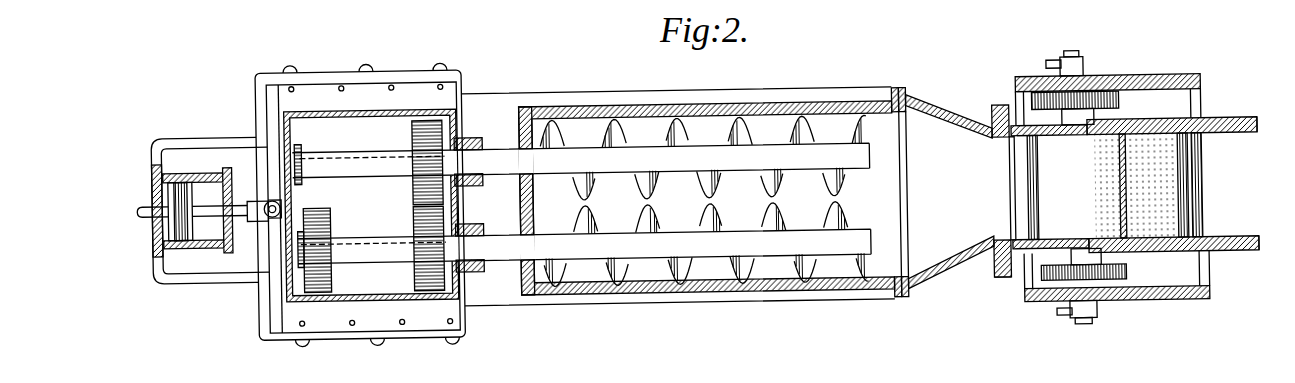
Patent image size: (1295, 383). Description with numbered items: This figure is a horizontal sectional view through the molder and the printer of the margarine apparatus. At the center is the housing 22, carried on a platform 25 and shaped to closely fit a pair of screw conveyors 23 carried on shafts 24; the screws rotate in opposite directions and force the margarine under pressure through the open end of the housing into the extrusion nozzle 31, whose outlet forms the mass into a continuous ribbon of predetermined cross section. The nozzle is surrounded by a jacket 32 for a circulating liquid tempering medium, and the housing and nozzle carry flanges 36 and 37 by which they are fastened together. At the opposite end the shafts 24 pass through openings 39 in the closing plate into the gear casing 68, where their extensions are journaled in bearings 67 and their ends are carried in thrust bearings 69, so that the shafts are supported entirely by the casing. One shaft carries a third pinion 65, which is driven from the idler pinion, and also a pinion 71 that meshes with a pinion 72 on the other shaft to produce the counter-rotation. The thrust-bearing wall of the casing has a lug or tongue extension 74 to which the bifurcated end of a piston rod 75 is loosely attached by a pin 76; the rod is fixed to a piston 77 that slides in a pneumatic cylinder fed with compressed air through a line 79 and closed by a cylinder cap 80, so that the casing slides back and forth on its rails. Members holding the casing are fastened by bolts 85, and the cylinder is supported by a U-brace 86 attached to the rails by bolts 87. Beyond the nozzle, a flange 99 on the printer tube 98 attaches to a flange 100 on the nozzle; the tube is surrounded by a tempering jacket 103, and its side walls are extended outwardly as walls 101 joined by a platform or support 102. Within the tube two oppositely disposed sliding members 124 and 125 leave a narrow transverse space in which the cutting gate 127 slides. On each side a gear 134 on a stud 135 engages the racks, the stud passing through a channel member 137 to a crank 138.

The housing 22 is at (750, 104).
The screw conveyors 23 is at (653, 210).
The shafts 24 is at (383, 237).
The platform 25 is at (616, 90).
The extrusion nozzle 31 is at (952, 113).
The jacket 32 is at (953, 272).
The flange 36 is at (893, 91).
The flange 37 is at (906, 91).
The openings 39 is at (531, 224).
The third pinion 65 is at (330, 213).
The bearings 67 is at (473, 220).
The gear casing 68 is at (400, 105).
The thrust bearings 69 is at (301, 142).
The pinion 71 is at (417, 271).
The pinion 72 is at (413, 127).
The lug or tongue extension 74 is at (280, 212).
The piston rod 75 is at (212, 206).
The pin 76 is at (268, 195).
The piston 77 is at (178, 178).
The line 79 is at (143, 197).
The cylinder cap 80 is at (232, 242).
The bolts 85 is at (342, 80).
The U-brace 86 is at (227, 130).
The bolts 87 is at (368, 60).
The tube 98 is at (1019, 261).
The flange 99 is at (1008, 280).
The flange 100 is at (998, 277).
The extended side walls 101 is at (1230, 127).
The platform or support 102 is at (1238, 176).
The jacket 103 is at (1063, 139).
The sliding member 124 is at (1033, 207).
The sliding member 125 is at (1197, 212).
The cutting gate 127 is at (1122, 199).
The gear 134 is at (1120, 107).
The stud 135 is at (1076, 63).
The channel members 137 is at (1165, 85).
The crank 138 is at (1056, 66).